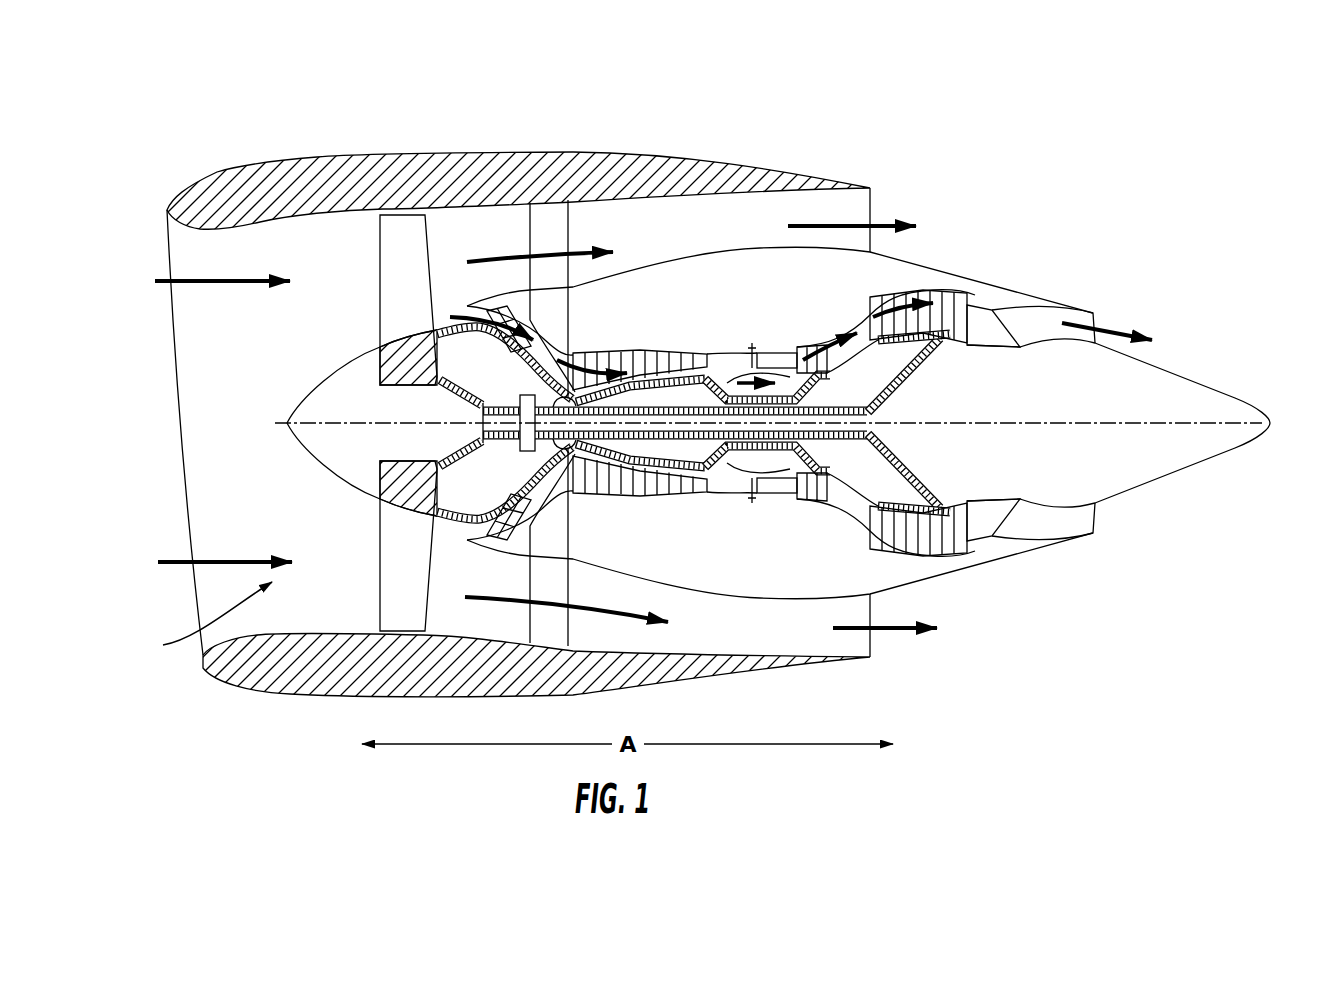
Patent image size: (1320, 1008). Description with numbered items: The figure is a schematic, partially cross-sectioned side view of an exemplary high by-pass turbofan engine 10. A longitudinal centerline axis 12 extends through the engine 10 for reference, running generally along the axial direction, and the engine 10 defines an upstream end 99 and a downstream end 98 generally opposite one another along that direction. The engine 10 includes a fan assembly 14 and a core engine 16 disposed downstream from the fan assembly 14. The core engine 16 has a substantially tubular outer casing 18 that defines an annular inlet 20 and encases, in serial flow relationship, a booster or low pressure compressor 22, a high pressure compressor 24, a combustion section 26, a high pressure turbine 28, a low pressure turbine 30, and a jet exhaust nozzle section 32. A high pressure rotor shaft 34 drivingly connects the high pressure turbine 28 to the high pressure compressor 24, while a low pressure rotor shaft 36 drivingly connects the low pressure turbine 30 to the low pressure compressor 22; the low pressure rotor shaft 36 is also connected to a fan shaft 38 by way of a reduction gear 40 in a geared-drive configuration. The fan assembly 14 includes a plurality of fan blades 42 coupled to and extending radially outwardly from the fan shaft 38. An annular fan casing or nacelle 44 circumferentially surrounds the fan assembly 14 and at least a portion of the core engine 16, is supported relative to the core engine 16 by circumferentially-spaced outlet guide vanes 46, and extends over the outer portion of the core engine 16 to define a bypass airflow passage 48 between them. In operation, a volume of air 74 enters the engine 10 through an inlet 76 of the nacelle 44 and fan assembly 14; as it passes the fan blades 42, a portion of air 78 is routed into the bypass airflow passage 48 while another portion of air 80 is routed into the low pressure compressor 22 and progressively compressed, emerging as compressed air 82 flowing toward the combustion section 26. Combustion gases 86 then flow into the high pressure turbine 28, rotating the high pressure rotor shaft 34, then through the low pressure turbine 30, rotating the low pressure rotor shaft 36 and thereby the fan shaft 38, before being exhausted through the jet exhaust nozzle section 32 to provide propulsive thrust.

The turbofan engine 10 is at (1010, 171).
The longitudinal centerline axis 12 is at (1038, 421).
The fan assembly 14 is at (455, 224).
The core engine 16 is at (766, 247).
The outer casing 18 is at (727, 588).
The annular inlet 20 is at (470, 530).
The low pressure compressor 22 is at (527, 497).
The high pressure compressor 24 is at (600, 482).
The combustion section 26 is at (773, 485).
The high pressure turbine 28 is at (823, 490).
The low pressure turbine 30 is at (952, 563).
The jet exhaust nozzle section 32 is at (1020, 538).
The high pressure rotor shaft 34 is at (797, 401).
The low pressure rotor shaft 36 is at (908, 375).
The fan shaft 38 is at (432, 398).
The reduction gear 40 is at (520, 388).
The fan blades 42 is at (396, 252).
The nacelle 44 is at (380, 158).
The outlet guide vanes 46 is at (560, 235).
The bypass airflow passage 48 is at (692, 252).
The volume of air 74 is at (204, 279).
The inlet 76 is at (206, 632).
The bypass air portion 78 is at (517, 258).
The core air portion 80 is at (466, 302).
The compressed air 82 is at (578, 352).
The combustion gases 86 is at (812, 346).
The downstream end 98 is at (1308, 409).
The upstream end 99 is at (152, 424).